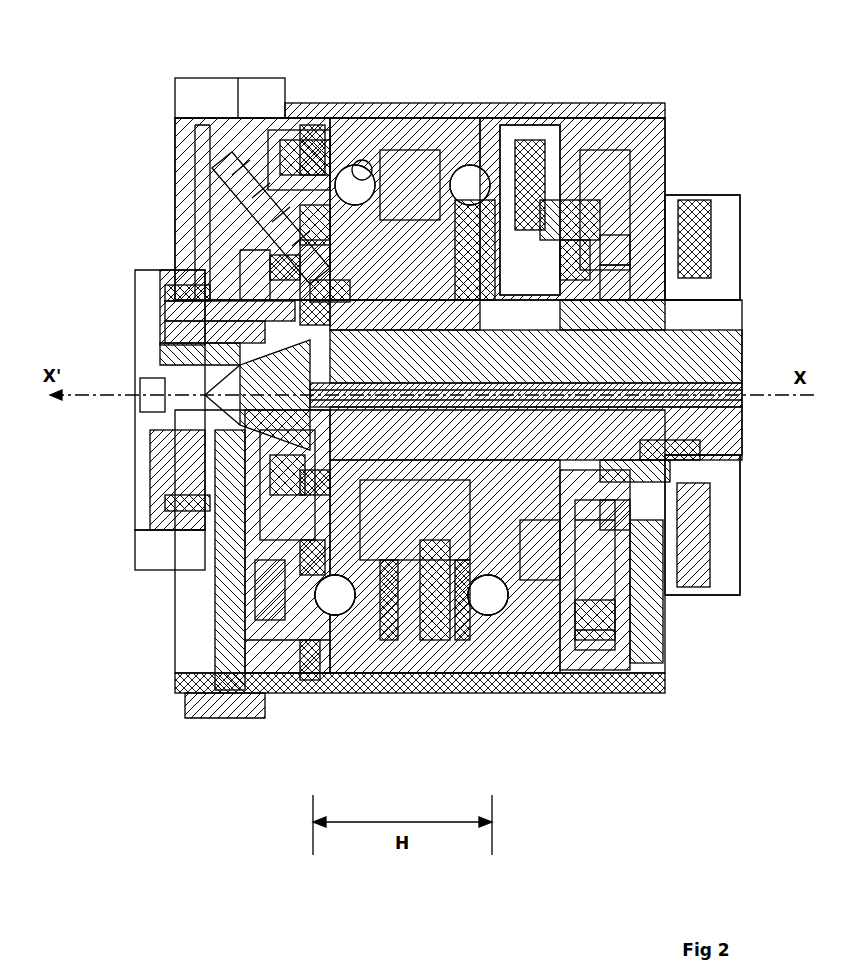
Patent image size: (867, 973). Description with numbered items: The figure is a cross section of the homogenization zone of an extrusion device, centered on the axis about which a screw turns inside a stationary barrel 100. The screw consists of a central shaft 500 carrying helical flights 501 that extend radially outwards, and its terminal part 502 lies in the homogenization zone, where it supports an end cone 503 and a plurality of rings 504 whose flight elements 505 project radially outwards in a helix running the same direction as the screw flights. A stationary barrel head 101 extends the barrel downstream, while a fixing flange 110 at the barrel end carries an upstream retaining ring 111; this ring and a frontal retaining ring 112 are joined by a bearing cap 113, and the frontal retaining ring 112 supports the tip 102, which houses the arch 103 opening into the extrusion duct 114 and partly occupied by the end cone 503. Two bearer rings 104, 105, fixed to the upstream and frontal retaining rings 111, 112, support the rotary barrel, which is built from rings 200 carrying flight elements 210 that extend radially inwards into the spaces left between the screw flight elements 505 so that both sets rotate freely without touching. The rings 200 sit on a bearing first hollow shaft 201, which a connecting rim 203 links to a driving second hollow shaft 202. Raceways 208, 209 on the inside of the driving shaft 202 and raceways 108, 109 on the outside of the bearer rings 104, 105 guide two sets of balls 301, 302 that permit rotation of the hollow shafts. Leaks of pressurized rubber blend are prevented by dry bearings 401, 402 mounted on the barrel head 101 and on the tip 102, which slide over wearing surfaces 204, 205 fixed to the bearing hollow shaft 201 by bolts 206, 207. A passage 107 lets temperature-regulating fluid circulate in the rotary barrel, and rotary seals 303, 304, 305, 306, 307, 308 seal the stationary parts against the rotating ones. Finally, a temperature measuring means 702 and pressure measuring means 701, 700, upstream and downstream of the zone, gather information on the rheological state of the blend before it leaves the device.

The stationary barrel 100 is at (738, 280).
The stationary barrel head 101 is at (640, 292).
The tip 102 is at (185, 455).
The arch 103 is at (175, 440).
The bearer ring 104 is at (625, 565).
The bearer ring 105 is at (360, 590).
The passage 107 is at (318, 225).
The raceway 108 is at (640, 608).
The raceway 109 is at (300, 257).
The fixing flange 110 is at (690, 255).
The upstream retaining ring 111 is at (645, 655).
The frontal retaining ring 112 is at (175, 575).
The bearing cap 113 is at (340, 108).
The extrusion duct 114 is at (160, 400).
The rings 200 is at (430, 292).
The bearing first hollow shaft 201 is at (350, 305).
The driving second hollow shaft 202 is at (478, 175).
The connecting rim 203 is at (358, 193).
The wearing surface 204 is at (560, 282).
The wearing surface 205 is at (310, 305).
The bolts 206 is at (600, 272).
The bolts 207 is at (292, 490).
The raceway 208 is at (470, 160).
The raceway 209 is at (368, 160).
The flight elements 210 is at (600, 355).
The set of balls 301 is at (492, 172).
The set of balls 302 is at (290, 120).
The rotary seal 303 is at (535, 215).
The rotary seal 304 is at (330, 290).
The rotary seal 305 is at (462, 642).
The rotary seal 306 is at (388, 642).
The rotary seal 307 is at (595, 625).
The rotary seal 308 is at (333, 187).
The dry bearing 401 is at (600, 335).
The dry bearing 402 is at (200, 293).
The shaft 500 is at (564, 417).
The helical flights 501 is at (660, 452).
The terminal part 502 is at (290, 312).
The end cone 503 is at (260, 352).
The rings 504 is at (447, 540).
The flight elements 505 is at (600, 375).
The means for measuring pressure 700 is at (222, 676).
The means for measuring pressure 701 is at (640, 470).
The means for measuring temperature 702 is at (330, 330).